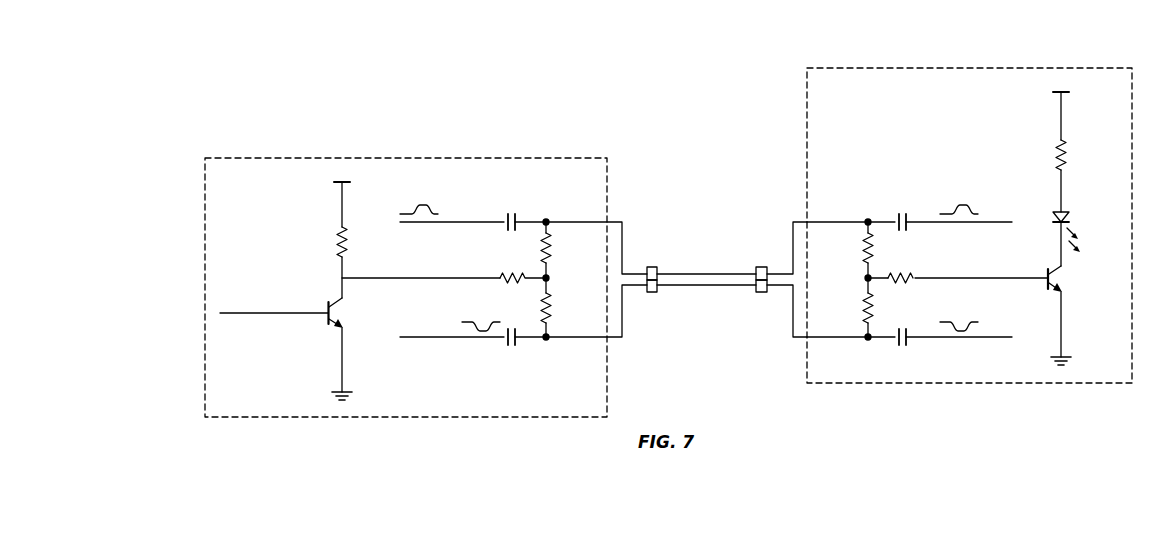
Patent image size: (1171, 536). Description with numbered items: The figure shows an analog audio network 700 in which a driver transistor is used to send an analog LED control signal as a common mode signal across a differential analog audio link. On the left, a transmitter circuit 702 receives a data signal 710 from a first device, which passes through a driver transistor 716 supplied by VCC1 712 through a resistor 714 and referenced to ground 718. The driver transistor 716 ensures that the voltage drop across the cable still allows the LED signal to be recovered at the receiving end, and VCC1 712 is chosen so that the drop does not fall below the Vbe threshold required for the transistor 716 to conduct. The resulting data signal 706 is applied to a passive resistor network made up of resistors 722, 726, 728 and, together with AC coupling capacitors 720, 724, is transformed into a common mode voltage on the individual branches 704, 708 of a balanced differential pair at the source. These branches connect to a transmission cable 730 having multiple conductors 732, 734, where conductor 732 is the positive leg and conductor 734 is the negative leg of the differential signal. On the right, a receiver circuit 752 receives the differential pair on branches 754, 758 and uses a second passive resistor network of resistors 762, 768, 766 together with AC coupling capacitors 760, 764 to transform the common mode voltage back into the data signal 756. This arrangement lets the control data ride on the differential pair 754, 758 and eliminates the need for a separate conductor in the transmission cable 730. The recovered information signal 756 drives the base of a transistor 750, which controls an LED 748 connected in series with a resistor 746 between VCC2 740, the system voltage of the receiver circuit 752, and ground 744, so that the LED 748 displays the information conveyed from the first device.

The analog audio network 700 is at (490, 63).
The transmitter circuit 702 is at (408, 158).
The branch of balanced differential pair 704 is at (412, 224).
The data signal 706 is at (445, 278).
The branch of balanced differential pair 708 is at (478, 338).
The data signal 710 is at (270, 313).
The VCC1 712 is at (325, 191).
The resistor 714 is at (325, 250).
The driver transistor 716 is at (325, 346).
The ground 718 is at (325, 403).
The AC coupling capacitor 720 is at (528, 205).
The resistor 722 is at (528, 265).
The AC coupling capacitor 724 is at (528, 368).
The resistor 726 is at (592, 258).
The resistor 728 is at (592, 316).
The transmission cable 730 is at (727, 287).
The conductor 732 is at (697, 272).
The conductor 734 is at (697, 286).
The VCC2 740 is at (1112, 100).
The ground 744 is at (1112, 370).
The resistor 746 is at (1112, 160).
The LED 748 is at (1115, 226).
The transistor 750 is at (1105, 286).
The receiver circuit 752 is at (975, 68).
The differential pair branch 754 is at (958, 224).
The data signal 756 is at (970, 278).
The differential pair branch 758 is at (958, 339).
The AC coupling capacitor 760 is at (920, 206).
The resistor 762 is at (920, 271).
The AC coupling capacitor 764 is at (920, 370).
The resistor 766 is at (857, 318).
The resistor 768 is at (857, 261).